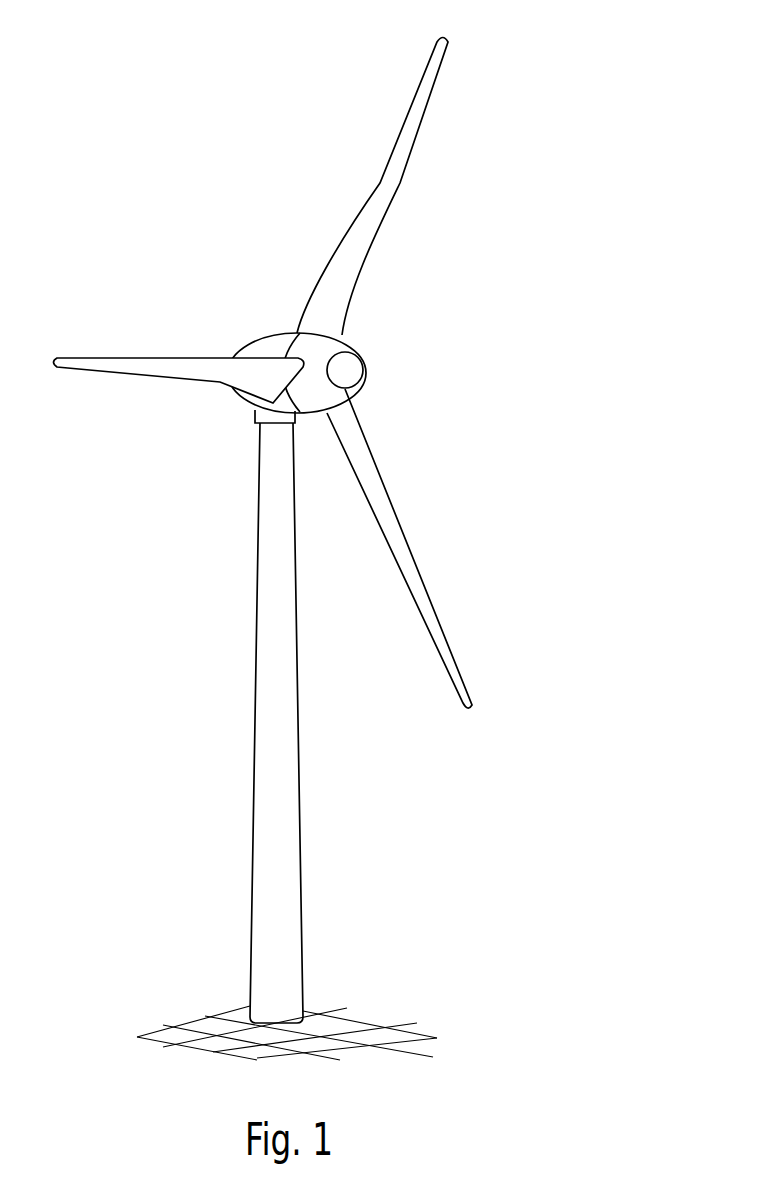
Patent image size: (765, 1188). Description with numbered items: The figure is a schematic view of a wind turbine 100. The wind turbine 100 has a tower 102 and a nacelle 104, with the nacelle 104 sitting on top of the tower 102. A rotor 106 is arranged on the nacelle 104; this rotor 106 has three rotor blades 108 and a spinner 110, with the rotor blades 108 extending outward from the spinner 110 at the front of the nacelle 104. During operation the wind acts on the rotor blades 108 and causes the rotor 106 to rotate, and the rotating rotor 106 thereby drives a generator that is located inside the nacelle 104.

The wind turbine 100 is at (200, 498).
The tower 102 is at (293, 803).
The nacelle 104 is at (263, 347).
The rotor 106 is at (492, 273).
The rotor blades 108 is at (383, 185).
The spinner 110 is at (350, 370).